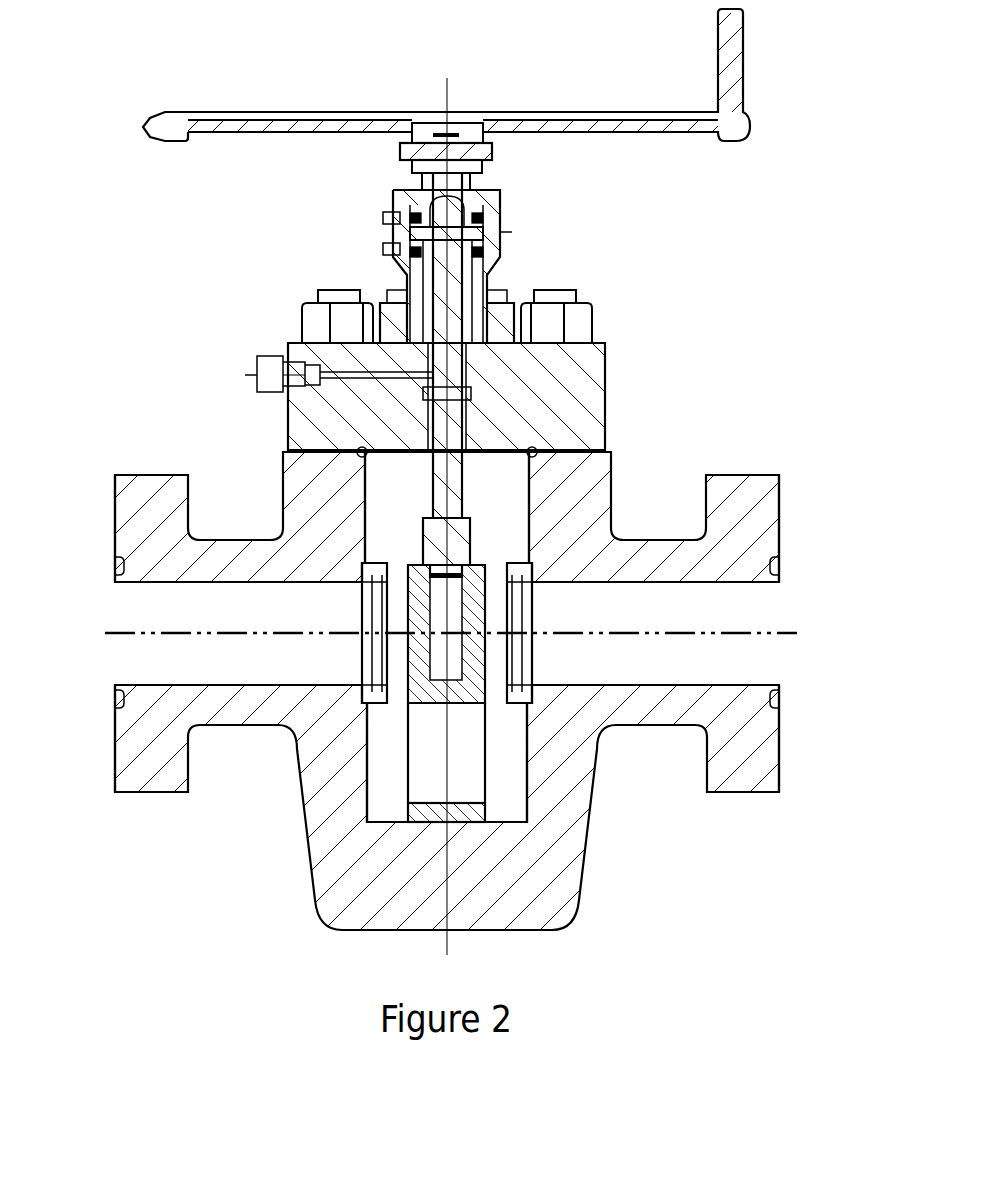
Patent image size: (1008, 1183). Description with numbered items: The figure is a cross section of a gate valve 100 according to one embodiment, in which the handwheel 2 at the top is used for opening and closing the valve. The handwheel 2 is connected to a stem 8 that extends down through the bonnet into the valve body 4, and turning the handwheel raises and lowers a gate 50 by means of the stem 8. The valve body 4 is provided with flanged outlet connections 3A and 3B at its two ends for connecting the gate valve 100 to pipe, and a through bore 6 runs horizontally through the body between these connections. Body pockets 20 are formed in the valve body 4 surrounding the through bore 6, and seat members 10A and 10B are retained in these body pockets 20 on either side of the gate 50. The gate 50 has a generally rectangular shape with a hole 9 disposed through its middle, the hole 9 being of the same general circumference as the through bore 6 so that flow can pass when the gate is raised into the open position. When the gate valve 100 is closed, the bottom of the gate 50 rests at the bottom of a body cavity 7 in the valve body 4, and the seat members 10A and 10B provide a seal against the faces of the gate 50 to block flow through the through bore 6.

The gate valve 100 is at (462, 482).
The handwheel 2 is at (330, 108).
The stem 8 is at (445, 408).
The valve body 4 is at (282, 765).
The body cavity 7 is at (503, 782).
The outlet connection 3A is at (750, 537).
The outlet connection 3B is at (135, 538).
The through bore 6 is at (233, 657).
The body pockets 20 is at (527, 560).
The hole 9 is at (467, 732).
The seat member 10A is at (393, 583).
The seat member 10B is at (490, 583).
The gate 50 is at (415, 682).